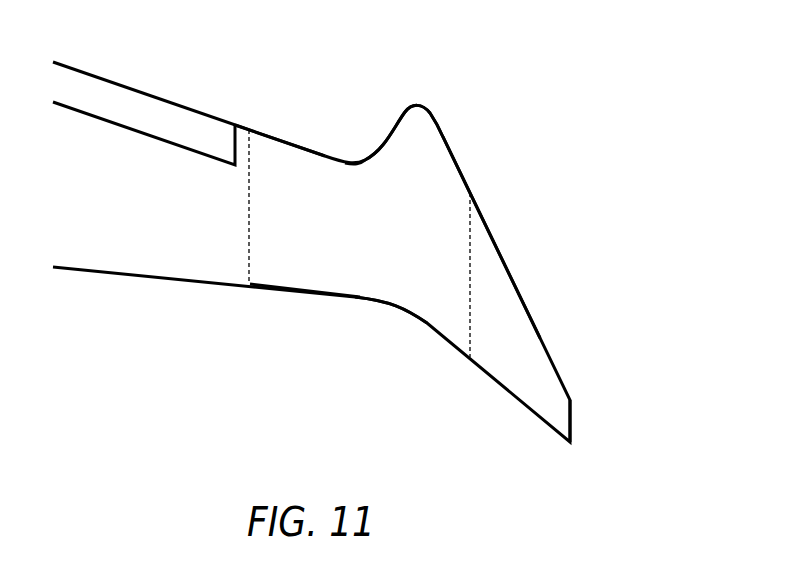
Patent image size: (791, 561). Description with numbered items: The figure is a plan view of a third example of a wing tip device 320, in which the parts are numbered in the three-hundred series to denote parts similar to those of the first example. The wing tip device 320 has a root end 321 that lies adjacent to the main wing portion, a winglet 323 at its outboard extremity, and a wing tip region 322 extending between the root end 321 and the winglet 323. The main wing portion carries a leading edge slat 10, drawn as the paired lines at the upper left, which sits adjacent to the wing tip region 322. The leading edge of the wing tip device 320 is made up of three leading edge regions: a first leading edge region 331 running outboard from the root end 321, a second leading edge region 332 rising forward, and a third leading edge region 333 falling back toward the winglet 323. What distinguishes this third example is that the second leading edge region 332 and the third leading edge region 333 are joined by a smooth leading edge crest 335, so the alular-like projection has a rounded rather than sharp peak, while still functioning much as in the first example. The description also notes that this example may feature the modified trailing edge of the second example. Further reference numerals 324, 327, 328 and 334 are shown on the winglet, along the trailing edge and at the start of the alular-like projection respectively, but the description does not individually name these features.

The leading edge slat 10 is at (138, 108).
The wing tip device 320 is at (512, 207).
The root end 321 is at (248, 243).
The wing tip region 322 is at (319, 228).
The winglet 323 is at (513, 323).
The lip end 324 is at (573, 413).
The bend portion 327 is at (383, 307).
The transition region 328 is at (470, 333).
The first leading edge region 331 is at (305, 143).
The second leading edge region 332 is at (398, 127).
The third leading edge region 333 is at (442, 132).
The trough 334 is at (377, 155).
The smooth leading edge crest 335 is at (417, 104).